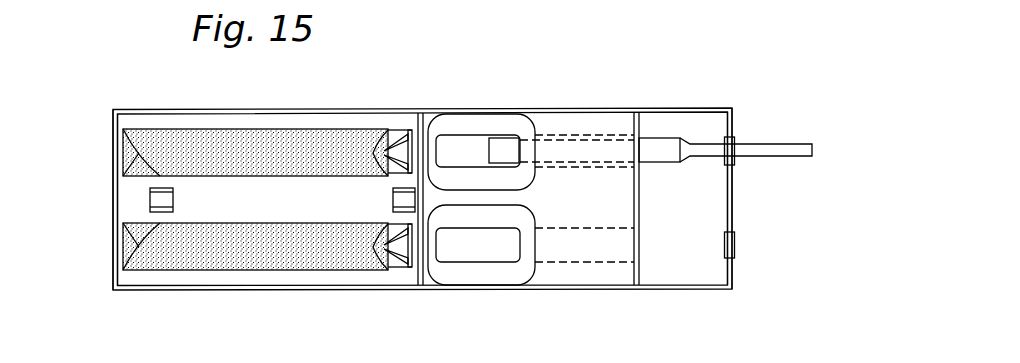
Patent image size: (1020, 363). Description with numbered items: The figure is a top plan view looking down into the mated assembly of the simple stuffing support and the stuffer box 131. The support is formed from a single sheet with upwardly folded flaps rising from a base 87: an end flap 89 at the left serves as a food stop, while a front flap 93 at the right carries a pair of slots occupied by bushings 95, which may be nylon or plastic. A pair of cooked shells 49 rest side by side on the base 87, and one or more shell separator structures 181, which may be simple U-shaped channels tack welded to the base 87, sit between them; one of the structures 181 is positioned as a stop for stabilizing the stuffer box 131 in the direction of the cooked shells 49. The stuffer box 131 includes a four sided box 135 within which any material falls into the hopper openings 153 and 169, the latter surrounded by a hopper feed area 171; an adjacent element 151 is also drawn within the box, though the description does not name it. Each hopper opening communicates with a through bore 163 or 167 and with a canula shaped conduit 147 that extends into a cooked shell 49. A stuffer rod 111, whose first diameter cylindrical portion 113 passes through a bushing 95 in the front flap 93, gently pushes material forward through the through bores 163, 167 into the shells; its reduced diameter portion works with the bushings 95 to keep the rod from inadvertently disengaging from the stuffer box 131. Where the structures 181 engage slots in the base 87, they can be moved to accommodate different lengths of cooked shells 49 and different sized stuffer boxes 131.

The cooked shell 49 is at (288, 135).
The base 87 is at (282, 212).
The end flap 89 is at (113, 160).
The front flap 93 is at (732, 203).
The bushing 95 is at (733, 138).
The stuffer rod 111 is at (779, 130).
The first diameter cylindrical portion 113 is at (505, 148).
The stuffer box 131 is at (646, 218).
The four sided box 135 is at (636, 108).
The canula shaped conduit 147 is at (394, 130).
The upper piston 151 is at (522, 126).
The hopper opening 153 is at (455, 142).
The through bore 163 is at (578, 128).
The through bore 167 is at (580, 262).
The hopper opening 169 is at (460, 249).
The hopper feed area 171 is at (503, 273).
The shell separator structure 181 is at (174, 198).